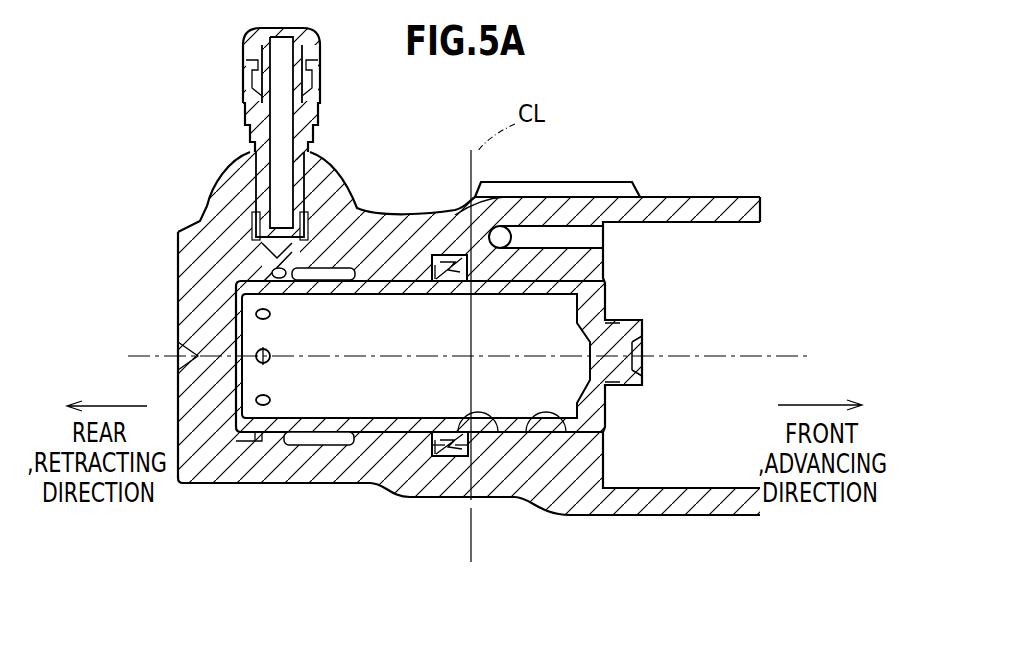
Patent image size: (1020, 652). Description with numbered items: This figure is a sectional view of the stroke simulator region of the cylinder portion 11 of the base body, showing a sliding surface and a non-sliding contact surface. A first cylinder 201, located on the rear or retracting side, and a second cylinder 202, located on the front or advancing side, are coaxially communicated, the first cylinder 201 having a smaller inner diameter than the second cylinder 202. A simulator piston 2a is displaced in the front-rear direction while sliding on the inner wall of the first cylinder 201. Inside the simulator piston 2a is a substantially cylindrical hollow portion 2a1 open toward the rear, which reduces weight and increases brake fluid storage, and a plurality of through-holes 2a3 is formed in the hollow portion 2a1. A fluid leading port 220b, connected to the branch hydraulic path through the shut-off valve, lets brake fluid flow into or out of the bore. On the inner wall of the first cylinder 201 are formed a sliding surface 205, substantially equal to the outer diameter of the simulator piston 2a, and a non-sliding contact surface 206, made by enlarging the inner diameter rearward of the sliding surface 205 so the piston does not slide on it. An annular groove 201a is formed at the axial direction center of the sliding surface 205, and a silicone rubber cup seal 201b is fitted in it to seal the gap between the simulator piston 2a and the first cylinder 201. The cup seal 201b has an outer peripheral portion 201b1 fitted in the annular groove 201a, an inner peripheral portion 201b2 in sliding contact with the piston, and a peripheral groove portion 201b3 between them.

The first cylinder 201 is at (353, 215).
The annular groove 201a is at (436, 255).
The cup seal 201b is at (567, 598).
The outer peripheral portion 201b1 is at (465, 456).
The inner peripheral portion 201b2 is at (500, 450).
The groove portion 201b3 is at (432, 456).
The second cylinder 202 is at (625, 250).
The sliding surface 205 is at (567, 443).
The non-sliding contact surface 206 is at (312, 440).
The fluid leading port 220b is at (318, 55).
The simulator piston 2a is at (294, 430).
The hollow portion 2a1 is at (356, 420).
The through-holes 2a3 is at (275, 395).
The cylinder portion 11 is at (380, 337).